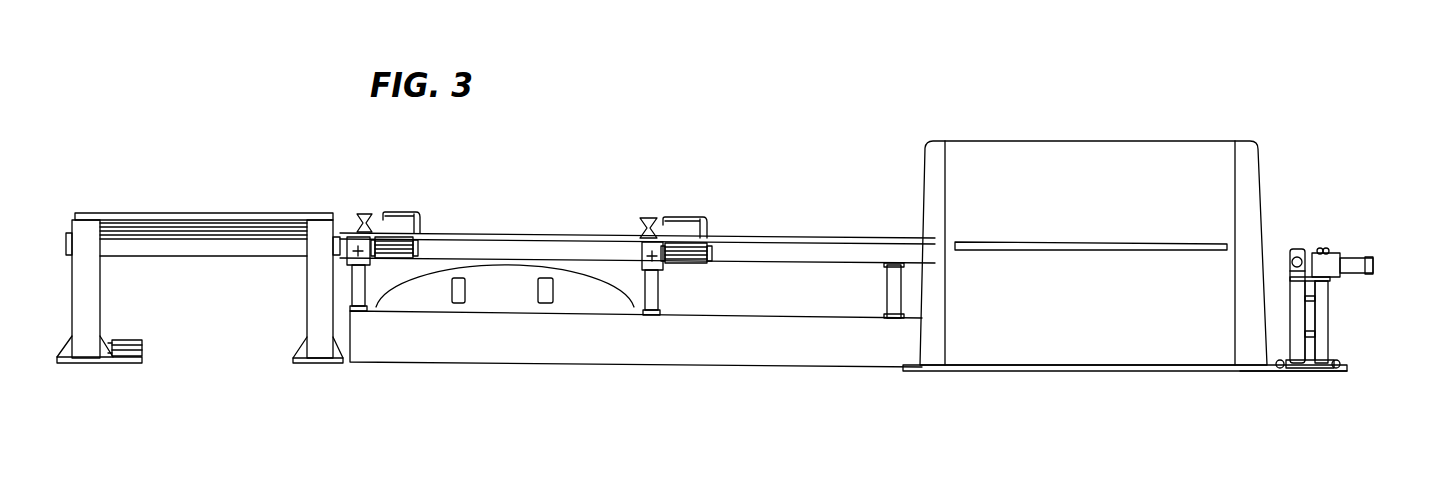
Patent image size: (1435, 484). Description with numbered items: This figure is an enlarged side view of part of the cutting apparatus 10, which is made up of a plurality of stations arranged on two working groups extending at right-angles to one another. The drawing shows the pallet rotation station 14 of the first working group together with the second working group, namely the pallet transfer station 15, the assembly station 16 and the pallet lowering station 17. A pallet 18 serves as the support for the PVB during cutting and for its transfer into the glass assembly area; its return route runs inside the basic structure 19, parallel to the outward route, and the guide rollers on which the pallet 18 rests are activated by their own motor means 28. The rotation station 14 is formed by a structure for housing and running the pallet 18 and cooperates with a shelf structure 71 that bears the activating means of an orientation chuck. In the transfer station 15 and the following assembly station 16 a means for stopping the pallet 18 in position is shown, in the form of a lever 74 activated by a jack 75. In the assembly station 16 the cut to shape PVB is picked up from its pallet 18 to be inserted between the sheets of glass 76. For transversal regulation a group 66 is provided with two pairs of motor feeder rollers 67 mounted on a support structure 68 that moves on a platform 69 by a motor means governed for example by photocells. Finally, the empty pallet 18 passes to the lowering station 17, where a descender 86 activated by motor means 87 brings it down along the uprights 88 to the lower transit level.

The cutting apparatus 10 is at (735, 100).
The pallet rotation station 14 is at (1152, 380).
The pallet transfer station 15 is at (797, 370).
The assembly station 16 is at (493, 368).
The pallet lowering station 17 is at (203, 356).
The pallet 18 is at (274, 237).
The basic structure 19 is at (648, 348).
The motor means 28 is at (688, 255).
The group 66 is at (1358, 340).
The motor feeder rollers 67 is at (1298, 247).
The support structure 68 is at (1327, 323).
The platform 69 is at (1322, 367).
The shelf structure 71 is at (997, 163).
The lever 74 is at (644, 220).
The jack 75 is at (686, 218).
The sheets of glass 76 is at (598, 283).
The descender 86 is at (193, 245).
The motor means 87 is at (127, 360).
The uprights 88 is at (317, 322).